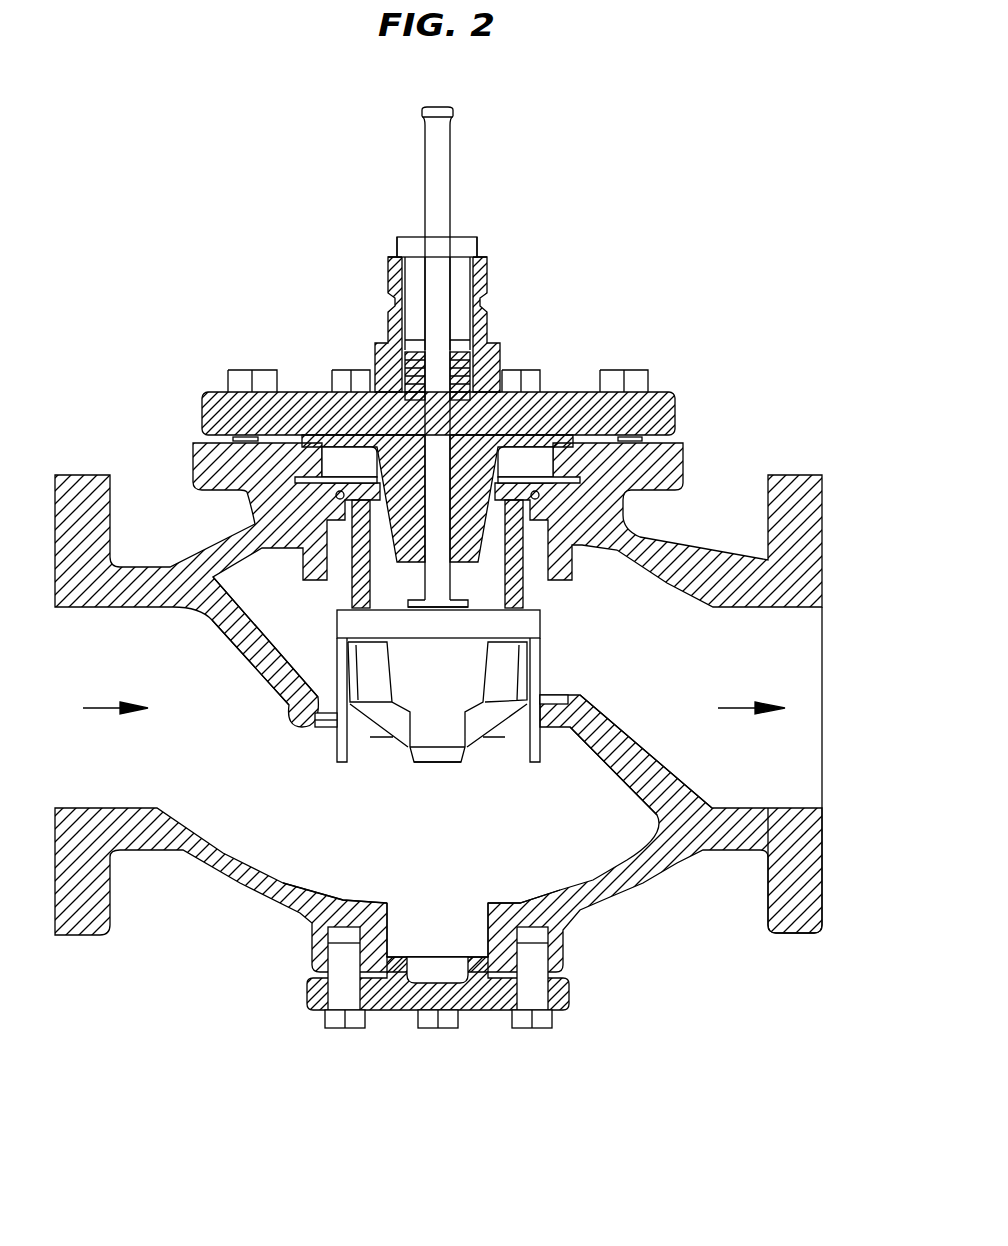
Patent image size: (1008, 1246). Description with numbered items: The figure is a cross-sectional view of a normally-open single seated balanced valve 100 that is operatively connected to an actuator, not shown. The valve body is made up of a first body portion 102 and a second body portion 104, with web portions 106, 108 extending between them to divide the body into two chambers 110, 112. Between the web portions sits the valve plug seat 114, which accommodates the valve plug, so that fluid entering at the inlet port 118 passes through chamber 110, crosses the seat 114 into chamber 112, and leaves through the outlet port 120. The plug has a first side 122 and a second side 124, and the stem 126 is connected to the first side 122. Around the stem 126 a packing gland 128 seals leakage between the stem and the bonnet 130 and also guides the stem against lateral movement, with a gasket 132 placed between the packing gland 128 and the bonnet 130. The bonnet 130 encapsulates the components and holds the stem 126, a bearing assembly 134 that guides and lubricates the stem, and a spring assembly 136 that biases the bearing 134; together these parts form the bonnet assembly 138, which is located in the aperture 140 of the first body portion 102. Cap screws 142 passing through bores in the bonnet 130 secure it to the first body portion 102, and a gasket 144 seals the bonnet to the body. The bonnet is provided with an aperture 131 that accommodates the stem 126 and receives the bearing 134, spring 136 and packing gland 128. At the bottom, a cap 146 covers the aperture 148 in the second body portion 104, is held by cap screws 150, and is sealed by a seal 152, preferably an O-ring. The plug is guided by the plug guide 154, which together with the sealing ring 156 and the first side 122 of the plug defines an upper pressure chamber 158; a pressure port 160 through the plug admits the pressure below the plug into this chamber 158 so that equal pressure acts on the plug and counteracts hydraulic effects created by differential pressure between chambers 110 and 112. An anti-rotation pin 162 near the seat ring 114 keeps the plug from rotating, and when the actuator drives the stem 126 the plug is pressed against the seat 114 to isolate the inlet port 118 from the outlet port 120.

The valve 100 is at (765, 296).
The first body portion 102 is at (822, 518).
The second body portion 104 is at (822, 885).
The web portion 106 is at (268, 730).
The web portion 108 is at (655, 748).
The chamber 110 is at (372, 852).
The chamber 112 is at (694, 672).
The valve plug seat 114 is at (380, 740).
The inlet port 118 is at (139, 784).
The outlet port 120 is at (822, 718).
The first side 122 is at (542, 618).
The second side 124 is at (542, 660).
The stem 126 is at (422, 185).
The packing gland 128 is at (483, 252).
The bonnet 130 is at (677, 412).
The aperture 131 is at (470, 237).
The gasket 132 is at (487, 275).
The bearing assembly 134 is at (500, 395).
The spring assembly 136 is at (497, 360).
The bonnet assembly 138 is at (550, 390).
The aperture 140 is at (340, 372).
The cap screws 142 is at (228, 382).
The gasket 144 is at (688, 480).
The cap 146 is at (565, 992).
The aperture 148 is at (435, 903).
The cap screws 150 is at (335, 1028).
The seal 152 is at (520, 960).
The plug guide 154 is at (578, 565).
The sealing ring 156 is at (337, 492).
The upper pressure chamber 158 is at (405, 606).
The pressure port 160 is at (395, 620).
The anti-rotation pin 162 is at (325, 727).